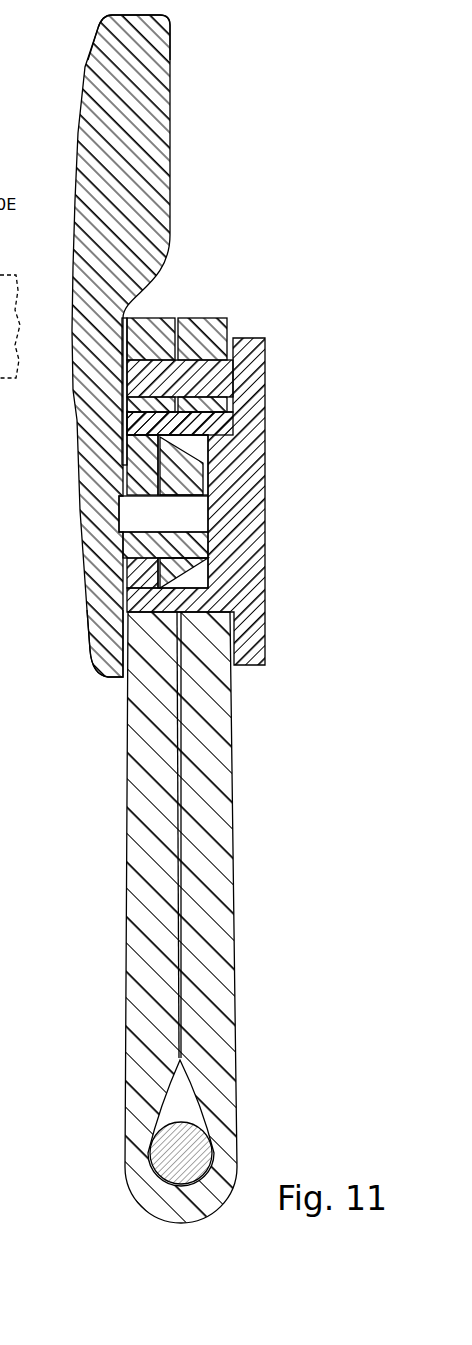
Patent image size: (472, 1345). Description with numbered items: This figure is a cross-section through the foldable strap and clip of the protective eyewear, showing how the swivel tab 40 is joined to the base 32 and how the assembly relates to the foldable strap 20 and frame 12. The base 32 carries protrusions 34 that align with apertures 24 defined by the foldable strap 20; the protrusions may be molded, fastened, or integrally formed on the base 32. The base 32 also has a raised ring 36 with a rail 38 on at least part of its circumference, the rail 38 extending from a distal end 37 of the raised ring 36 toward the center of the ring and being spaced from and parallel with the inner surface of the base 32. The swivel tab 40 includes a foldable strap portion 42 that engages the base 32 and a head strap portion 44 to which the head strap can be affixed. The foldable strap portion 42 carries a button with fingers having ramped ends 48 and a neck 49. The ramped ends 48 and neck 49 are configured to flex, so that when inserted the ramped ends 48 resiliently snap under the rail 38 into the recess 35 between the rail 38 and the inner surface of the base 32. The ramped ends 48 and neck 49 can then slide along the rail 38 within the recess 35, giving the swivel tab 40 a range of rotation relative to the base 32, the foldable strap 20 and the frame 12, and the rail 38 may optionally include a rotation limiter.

The frame 12 is at (187, 1155).
The foldable strap 20 is at (213, 852).
The apertures 24 is at (155, 358).
The base 32 is at (265, 377).
The protrusions 34 is at (203, 372).
The recess 35 is at (198, 446).
The raised ring 36 is at (143, 421).
The distal end 37 is at (193, 512).
The rail 38 is at (143, 453).
The swivel tab 40 is at (78, 333).
The foldable strap portion 42 is at (98, 632).
The head strap portion 44 is at (162, 70).
The ramped ends 48 is at (183, 555).
The neck 49 is at (145, 550).